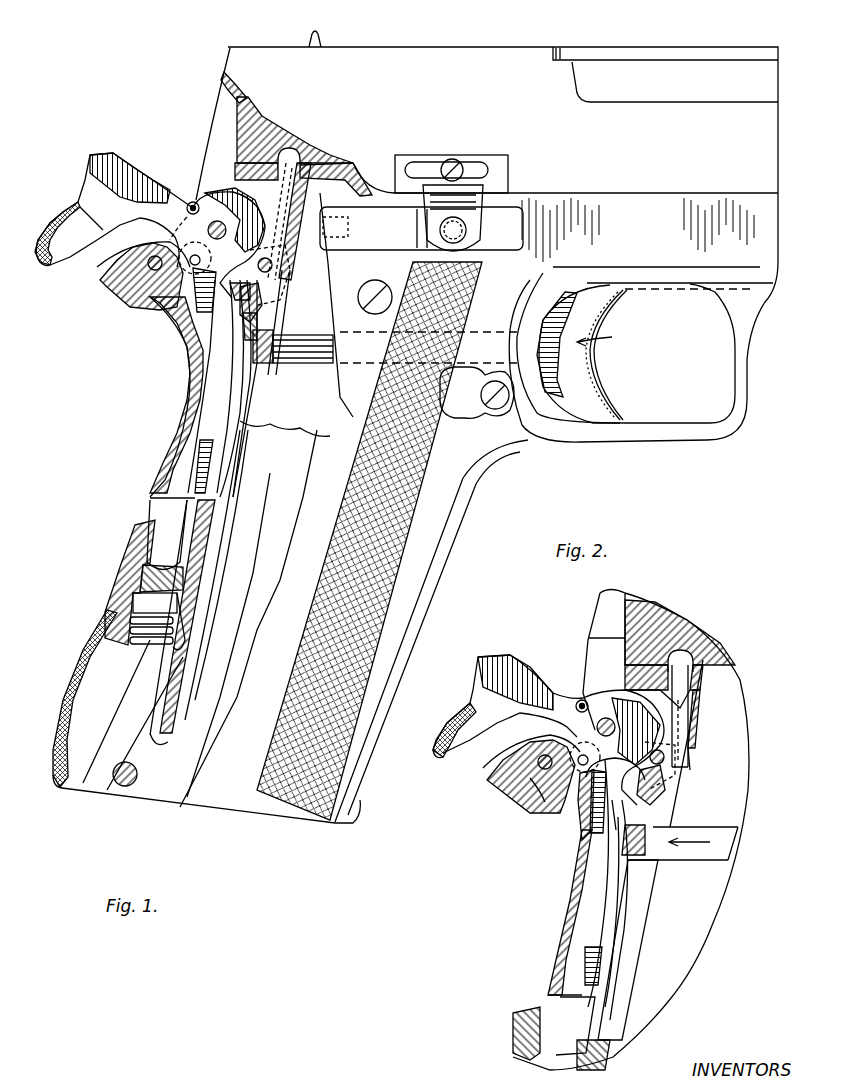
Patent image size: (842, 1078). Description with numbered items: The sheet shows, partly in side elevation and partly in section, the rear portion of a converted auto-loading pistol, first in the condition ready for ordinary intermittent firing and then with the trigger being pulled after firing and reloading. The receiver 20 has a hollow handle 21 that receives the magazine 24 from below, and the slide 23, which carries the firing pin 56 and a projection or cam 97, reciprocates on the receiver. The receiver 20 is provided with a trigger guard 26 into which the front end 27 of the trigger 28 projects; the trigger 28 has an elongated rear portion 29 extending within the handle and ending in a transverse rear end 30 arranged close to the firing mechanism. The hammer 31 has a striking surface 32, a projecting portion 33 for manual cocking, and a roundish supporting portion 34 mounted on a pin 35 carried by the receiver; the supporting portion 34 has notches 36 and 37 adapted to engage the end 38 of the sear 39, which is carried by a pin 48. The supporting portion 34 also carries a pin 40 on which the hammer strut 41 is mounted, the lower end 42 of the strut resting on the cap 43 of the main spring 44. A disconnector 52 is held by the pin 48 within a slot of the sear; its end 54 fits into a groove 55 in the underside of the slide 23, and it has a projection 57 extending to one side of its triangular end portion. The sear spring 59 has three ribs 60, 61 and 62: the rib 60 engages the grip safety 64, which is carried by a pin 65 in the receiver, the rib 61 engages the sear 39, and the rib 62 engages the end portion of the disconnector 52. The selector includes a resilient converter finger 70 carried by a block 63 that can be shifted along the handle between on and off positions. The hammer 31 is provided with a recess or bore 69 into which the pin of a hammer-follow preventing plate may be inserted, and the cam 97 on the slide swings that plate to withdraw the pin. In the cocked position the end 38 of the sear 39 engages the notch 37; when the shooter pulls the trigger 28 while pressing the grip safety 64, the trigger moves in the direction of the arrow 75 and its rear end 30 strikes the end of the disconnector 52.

In FIG. 1, the receiver 20 is at (500, 446).
In FIG. 2, the receiver 20 is at (652, 660).
In FIG. 1, the hollow handle 21 is at (442, 591).
In FIG. 1, the slide 23 is at (505, 58).
In FIG. 2, the slide 23 is at (652, 618).
In FIG. 1, the magazine 24 is at (255, 610).
In FIG. 2, the magazine 24 is at (660, 1003).
In FIG. 1, the trigger guard 26 is at (683, 433).
In FIG. 1, the front end 27 is at (582, 398).
In FIG. 1, the trigger 28 is at (605, 340).
In FIG. 2, the trigger 28 is at (734, 842).
In FIG. 1, the elongated rear portion 29 is at (318, 360).
In FIG. 2, the elongated rear portion 29 is at (702, 842).
In FIG. 1, the transverse rear end 30 is at (262, 368).
In FIG. 2, the transverse rear end 30 is at (668, 825).
In FIG. 1, the hammer 31 is at (135, 195).
In FIG. 2, the hammer 31 is at (538, 690).
In FIG. 1, the striking surface 32 is at (98, 155).
In FIG. 2, the striking surface 32 is at (490, 657).
In FIG. 1, the projecting portion 33 is at (60, 233).
In FIG. 2, the projecting portion 33 is at (445, 752).
In FIG. 1, the roundish supporting portion 34 is at (200, 310).
In FIG. 2, the roundish supporting portion 34 is at (580, 745).
In FIG. 1, the pin 35 is at (225, 213).
In FIG. 2, the pin 35 is at (604, 718).
In FIG. 1, the notch 36 is at (257, 160).
In FIG. 2, the notch 36 is at (700, 705).
In FIG. 1, the notch 37 is at (218, 250).
In FIG. 2, the notch 37 is at (668, 722).
In FIG. 1, the end of sear 38 is at (290, 243).
In FIG. 2, the end of sear 38 is at (683, 735).
In FIG. 1, the sear 39 is at (270, 300).
In FIG. 2, the sear 39 is at (667, 770).
In FIG. 1, the pin 40 is at (147, 270).
In FIG. 2, the pin 40 is at (592, 795).
In FIG. 1, the hammer strut 41 is at (205, 320).
In FIG. 2, the hammer strut 41 is at (595, 812).
In FIG. 1, the lower end 42 is at (172, 542).
In FIG. 1, the cap 43 is at (130, 590).
In FIG. 2, the cap 43 is at (530, 1050).
In FIG. 1, the main spring 44 is at (118, 615).
In FIG. 1, the pin 48 is at (268, 268).
In FIG. 2, the pin 48 is at (665, 758).
In FIG. 1, the disconnector 52 is at (300, 212).
In FIG. 2, the disconnector 52 is at (680, 705).
In FIG. 1, the end 54 is at (297, 168).
In FIG. 2, the end 54 is at (703, 670).
In FIG. 1, the groove 55 is at (293, 160).
In FIG. 2, the groove 55 is at (690, 655).
In FIG. 1, the firing pin 56 is at (242, 94).
In FIG. 1, the projection 57 is at (340, 347).
In FIG. 1, the sear spring 59 is at (218, 512).
In FIG. 2, the sear spring 59 is at (610, 1005).
In FIG. 1, the rib 60 is at (185, 388).
In FIG. 2, the rib 60 is at (600, 908).
In FIG. 1, the rib 61 is at (235, 382).
In FIG. 1, the rib 62 is at (247, 440).
In FIG. 2, the rib 62 is at (627, 947).
In FIG. 1, the block 63 is at (232, 365).
In FIG. 1, the grip safety 64 is at (178, 287).
In FIG. 2, the grip safety 64 is at (540, 782).
In FIG. 1, the pin 65 is at (120, 278).
In FIG. 2, the pin 65 is at (530, 768).
In FIG. 1, the recess or bore 69 is at (192, 202).
In FIG. 2, the recess or bore 69 is at (582, 700).
In FIG. 1, the resilient converter finger 70 is at (237, 361).
In FIG. 2, the resilient converter finger 70 is at (622, 883).
In FIG. 1, the arrow 75 is at (332, 357).
In FIG. 1, the projection or cam 97 is at (470, 247).